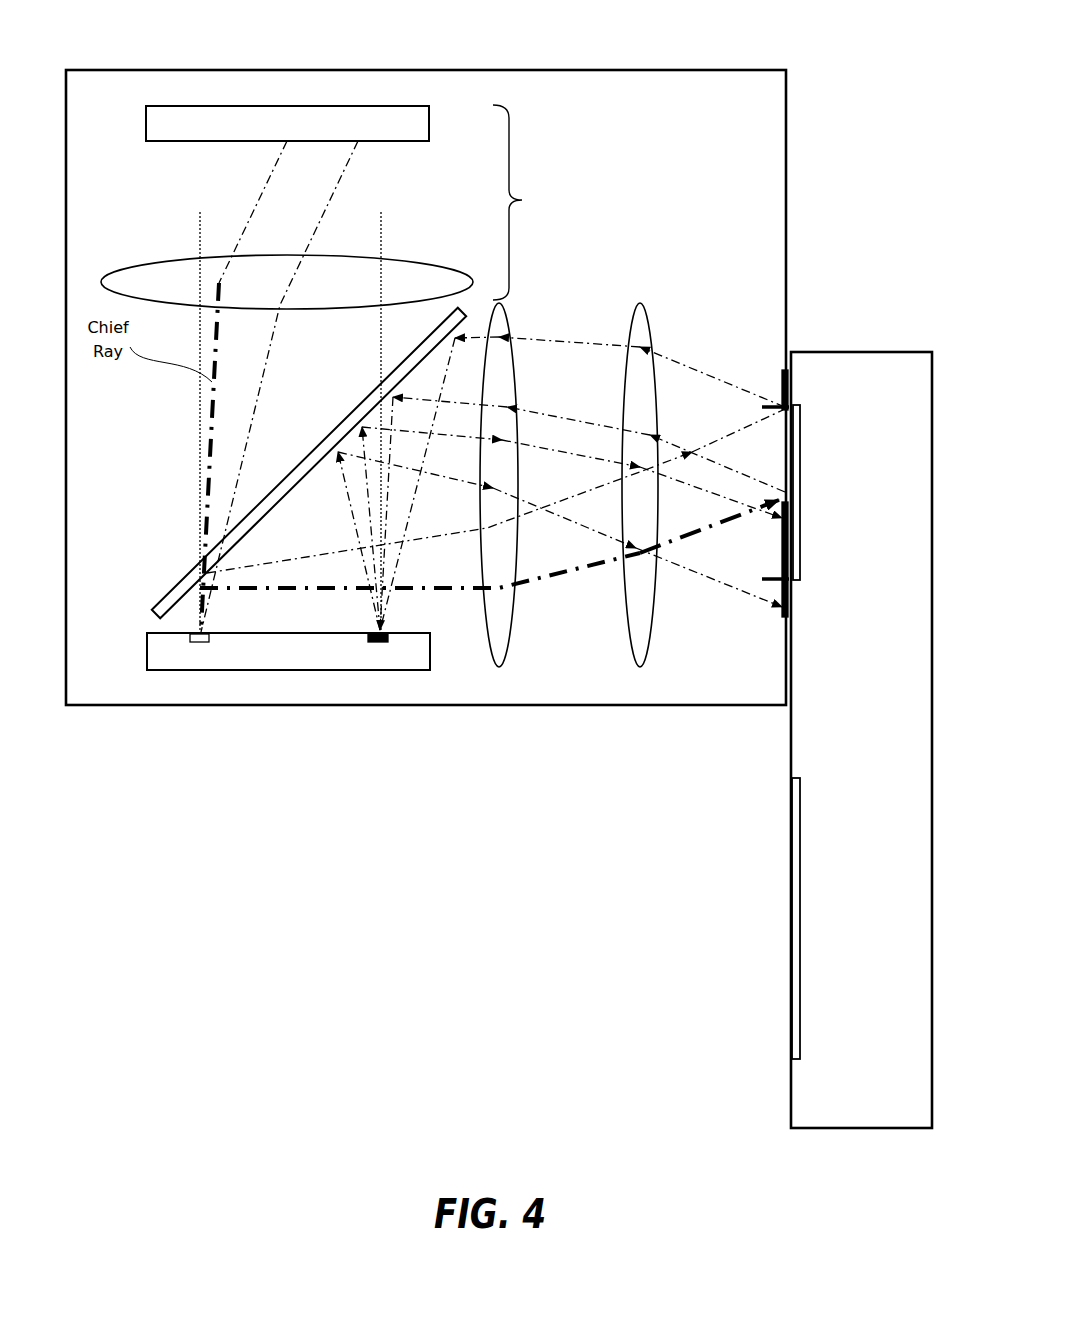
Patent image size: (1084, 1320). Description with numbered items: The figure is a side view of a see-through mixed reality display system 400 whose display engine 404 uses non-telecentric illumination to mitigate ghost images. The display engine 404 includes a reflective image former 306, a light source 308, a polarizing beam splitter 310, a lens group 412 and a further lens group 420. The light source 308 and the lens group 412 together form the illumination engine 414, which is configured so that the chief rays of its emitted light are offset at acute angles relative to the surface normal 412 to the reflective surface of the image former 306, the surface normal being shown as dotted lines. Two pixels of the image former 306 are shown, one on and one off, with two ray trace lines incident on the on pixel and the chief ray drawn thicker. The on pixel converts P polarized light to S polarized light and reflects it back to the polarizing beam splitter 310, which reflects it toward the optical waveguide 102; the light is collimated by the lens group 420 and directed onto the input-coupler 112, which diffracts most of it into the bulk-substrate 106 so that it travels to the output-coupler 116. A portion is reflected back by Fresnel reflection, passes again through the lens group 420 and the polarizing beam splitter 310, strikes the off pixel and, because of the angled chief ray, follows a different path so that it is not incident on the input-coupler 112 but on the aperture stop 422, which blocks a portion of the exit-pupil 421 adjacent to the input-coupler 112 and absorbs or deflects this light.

The mixed reality display system 400 is at (359, 26).
The display engine 404 is at (760, 69).
The light source 308 is at (146, 117).
The lens group 412 is at (200, 222).
The illumination engine 414 is at (584, 202).
The polarizing beam splitter 310 is at (167, 594).
The image former 306 is at (147, 648).
The lens group 420 is at (636, 666).
The exit-pupil 421 is at (778, 403).
The aperture stop 422 is at (782, 370).
The optical waveguide 102 is at (875, 320).
The bulk-substrate 106 is at (886, 696).
The input-coupler 112 is at (800, 437).
The output-coupler 116 is at (790, 922).